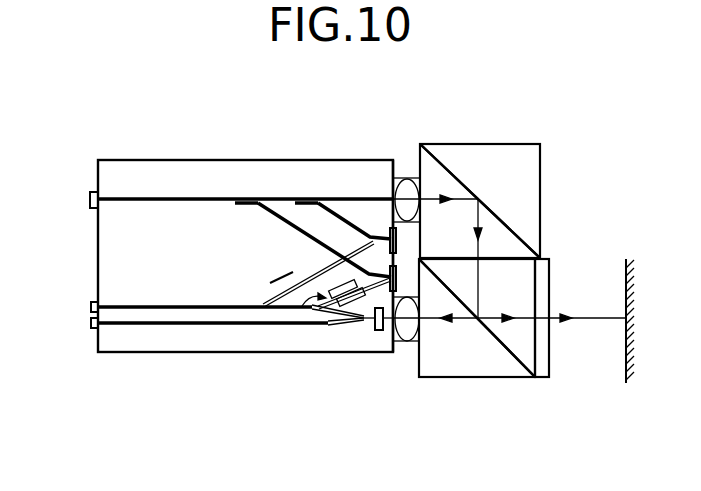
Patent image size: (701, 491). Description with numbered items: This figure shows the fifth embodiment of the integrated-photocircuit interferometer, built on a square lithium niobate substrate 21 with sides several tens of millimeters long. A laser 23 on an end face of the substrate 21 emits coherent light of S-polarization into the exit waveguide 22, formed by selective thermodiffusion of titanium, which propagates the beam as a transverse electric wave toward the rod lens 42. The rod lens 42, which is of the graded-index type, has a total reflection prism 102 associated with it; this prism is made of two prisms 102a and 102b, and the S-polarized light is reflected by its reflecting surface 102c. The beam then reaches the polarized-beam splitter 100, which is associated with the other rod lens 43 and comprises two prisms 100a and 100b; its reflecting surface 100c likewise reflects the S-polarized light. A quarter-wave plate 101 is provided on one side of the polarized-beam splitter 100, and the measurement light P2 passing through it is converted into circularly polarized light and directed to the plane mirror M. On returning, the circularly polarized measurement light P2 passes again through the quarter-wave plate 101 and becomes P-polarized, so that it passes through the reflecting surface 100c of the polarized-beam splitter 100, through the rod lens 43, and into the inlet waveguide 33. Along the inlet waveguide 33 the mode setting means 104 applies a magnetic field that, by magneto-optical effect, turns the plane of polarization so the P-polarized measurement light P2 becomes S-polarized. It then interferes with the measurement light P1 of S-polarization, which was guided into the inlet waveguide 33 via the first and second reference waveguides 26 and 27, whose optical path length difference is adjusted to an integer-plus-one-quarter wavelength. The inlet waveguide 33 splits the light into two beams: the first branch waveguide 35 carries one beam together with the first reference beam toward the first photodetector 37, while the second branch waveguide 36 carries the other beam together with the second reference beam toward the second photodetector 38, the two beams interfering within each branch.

The substrate 21 is at (238, 178).
The exit waveguide 22 is at (168, 199).
The laser 23 is at (92, 198).
The first reference waveguide 26 is at (333, 207).
The second reference waveguide 27 is at (283, 214).
The inlet waveguide 33 is at (378, 331).
The first branch waveguide 35 is at (172, 306).
The second branch waveguide 36 is at (178, 326).
The first photodetector 37 is at (91, 306).
The second photodetector 38 is at (91, 326).
The rod lens 42 is at (404, 178).
The rod lens 43 is at (417, 343).
The polarized-beam splitter 100 is at (518, 363).
The prism 100a is at (461, 352).
The prism 100b is at (526, 355).
The reflecting surface 100c is at (510, 345).
The quarter-wave plate 101 is at (567, 332).
The total reflection prism 102 is at (511, 159).
The prism 102a is at (442, 180).
The prism 102b is at (503, 170).
The reflecting surface 102c is at (447, 193).
The mode setting means 104 is at (398, 352).
The plane mirror M is at (625, 268).
The measurement light P1 is at (278, 286).
The measurement light P2 is at (578, 318).